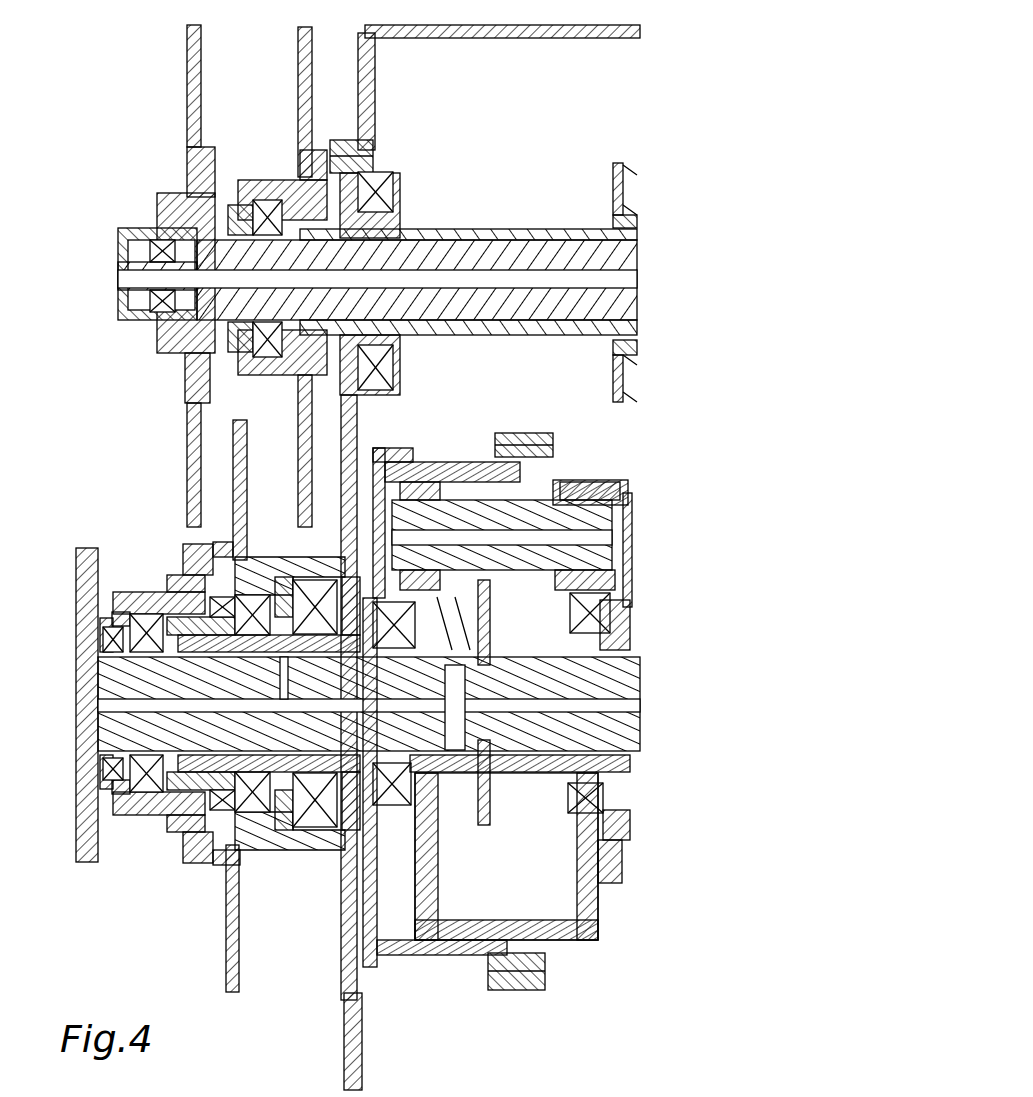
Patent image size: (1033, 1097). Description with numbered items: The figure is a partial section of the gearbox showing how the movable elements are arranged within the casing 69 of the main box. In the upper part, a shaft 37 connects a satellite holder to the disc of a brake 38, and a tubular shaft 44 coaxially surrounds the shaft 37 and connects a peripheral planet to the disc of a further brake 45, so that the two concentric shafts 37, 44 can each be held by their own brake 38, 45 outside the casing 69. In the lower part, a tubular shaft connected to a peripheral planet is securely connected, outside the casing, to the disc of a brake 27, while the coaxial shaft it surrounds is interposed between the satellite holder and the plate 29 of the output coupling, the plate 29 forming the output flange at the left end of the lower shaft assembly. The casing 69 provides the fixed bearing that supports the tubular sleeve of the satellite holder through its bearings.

The brake 27 is at (252, 490).
The plate of an output coupling 29 is at (100, 574).
The shaft 37 is at (525, 258).
The brake 38 is at (201, 74).
The tubular shaft 44 is at (450, 232).
The brake 45 is at (298, 67).
The casing 69 is at (370, 104).